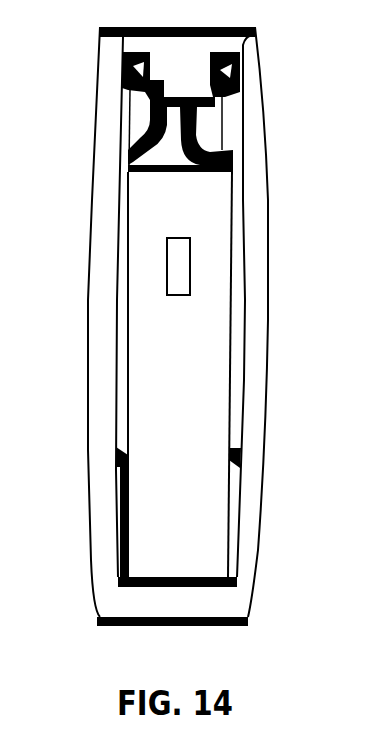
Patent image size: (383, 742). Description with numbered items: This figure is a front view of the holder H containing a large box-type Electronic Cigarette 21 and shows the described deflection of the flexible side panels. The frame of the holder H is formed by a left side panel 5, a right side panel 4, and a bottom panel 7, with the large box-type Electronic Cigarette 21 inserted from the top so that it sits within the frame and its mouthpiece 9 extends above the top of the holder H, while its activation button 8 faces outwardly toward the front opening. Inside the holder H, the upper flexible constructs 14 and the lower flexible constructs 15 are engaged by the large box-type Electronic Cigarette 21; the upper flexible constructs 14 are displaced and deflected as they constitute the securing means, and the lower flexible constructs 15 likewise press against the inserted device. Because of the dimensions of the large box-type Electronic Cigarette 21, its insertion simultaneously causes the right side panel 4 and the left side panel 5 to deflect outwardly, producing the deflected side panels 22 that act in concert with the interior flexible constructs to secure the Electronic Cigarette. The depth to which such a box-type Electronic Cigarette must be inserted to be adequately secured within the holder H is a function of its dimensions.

The right side panel 4 is at (257, 163).
The left side panel 5 is at (103, 168).
The bottom panel 7 is at (137, 605).
The activation button 8 is at (182, 265).
The mouthpiece 9 is at (167, 120).
The upper flexible constructs 14 is at (140, 123).
The lower flexible constructs 15 is at (120, 498).
The large box-type Electronic Cigarette 21 is at (208, 372).
The deflected side panels 22 is at (88, 298).
The holder H is at (98, 407).